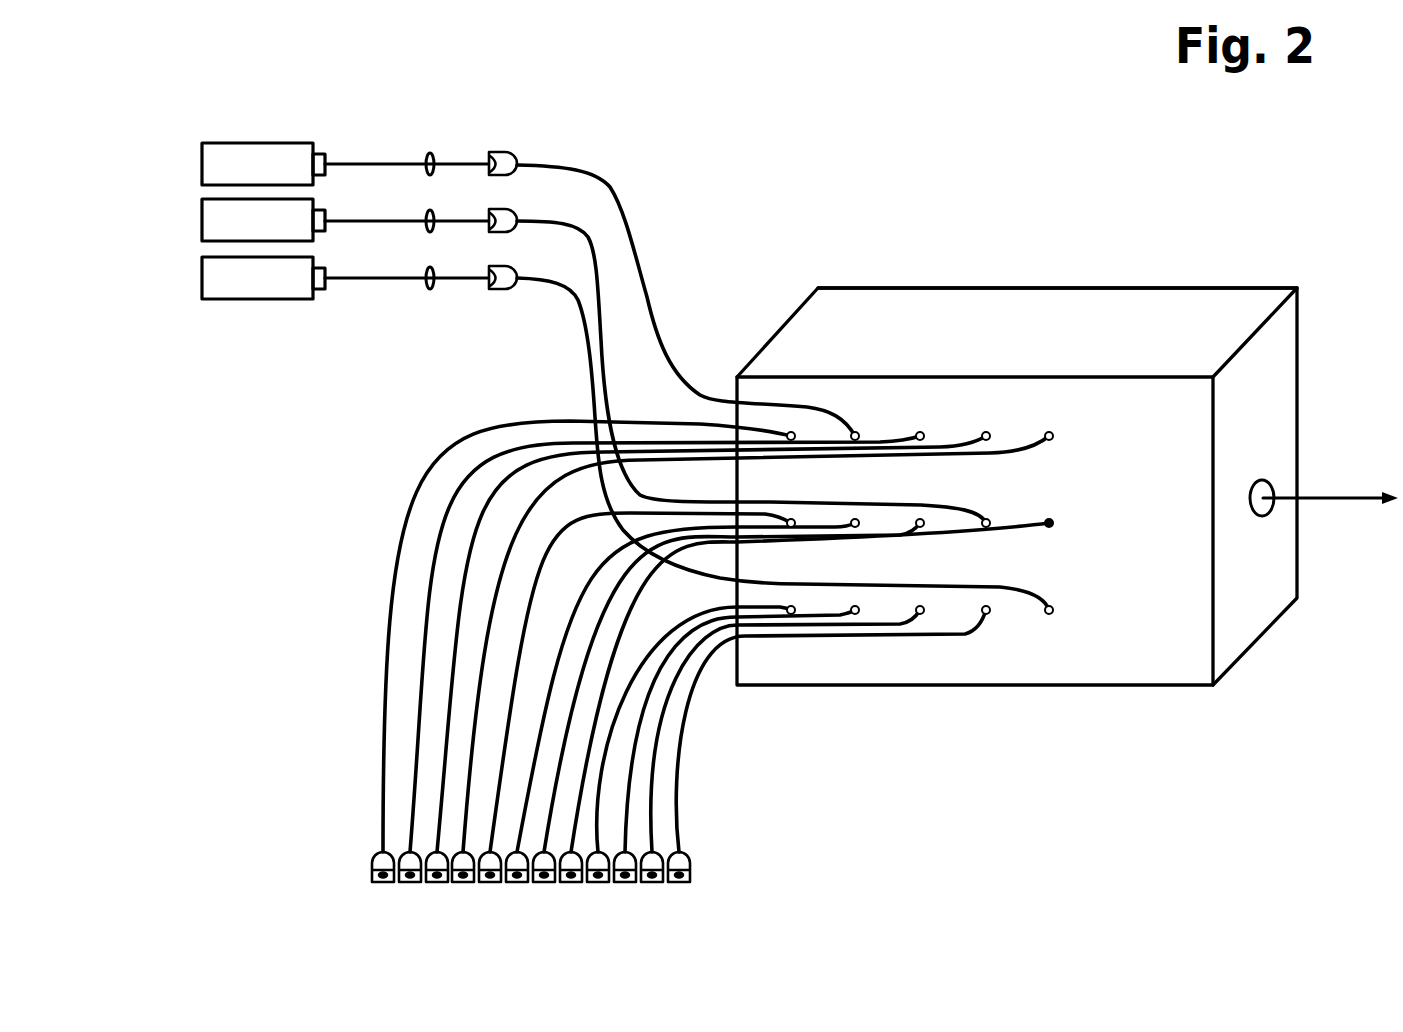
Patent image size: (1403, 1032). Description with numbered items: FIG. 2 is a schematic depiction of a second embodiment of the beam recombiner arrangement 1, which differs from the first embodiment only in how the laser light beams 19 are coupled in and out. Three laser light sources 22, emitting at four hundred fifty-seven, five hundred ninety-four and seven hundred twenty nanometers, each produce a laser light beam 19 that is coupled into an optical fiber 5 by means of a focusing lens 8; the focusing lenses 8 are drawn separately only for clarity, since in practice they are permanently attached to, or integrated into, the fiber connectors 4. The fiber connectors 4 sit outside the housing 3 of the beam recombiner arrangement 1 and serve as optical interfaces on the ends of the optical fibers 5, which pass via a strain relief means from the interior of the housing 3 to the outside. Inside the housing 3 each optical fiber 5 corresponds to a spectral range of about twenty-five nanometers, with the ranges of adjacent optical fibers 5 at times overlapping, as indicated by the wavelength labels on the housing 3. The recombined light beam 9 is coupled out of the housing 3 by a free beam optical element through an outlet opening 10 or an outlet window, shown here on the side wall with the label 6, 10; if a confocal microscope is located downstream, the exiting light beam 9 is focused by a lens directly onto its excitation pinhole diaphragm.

The beam recombiner arrangement 1 is at (932, 250).
The housing 3 is at (1200, 287).
The fiber connectors 4 is at (513, 160).
The optical fibers 5 is at (647, 297).
The output opening 6 is at (1285, 603).
The focusing lens 8 is at (427, 285).
The recombined light beam 9 is at (1333, 502).
The outlet opening 10 is at (1263, 517).
The laser light beams 19 is at (368, 280).
The laser light sources 22 is at (202, 162).